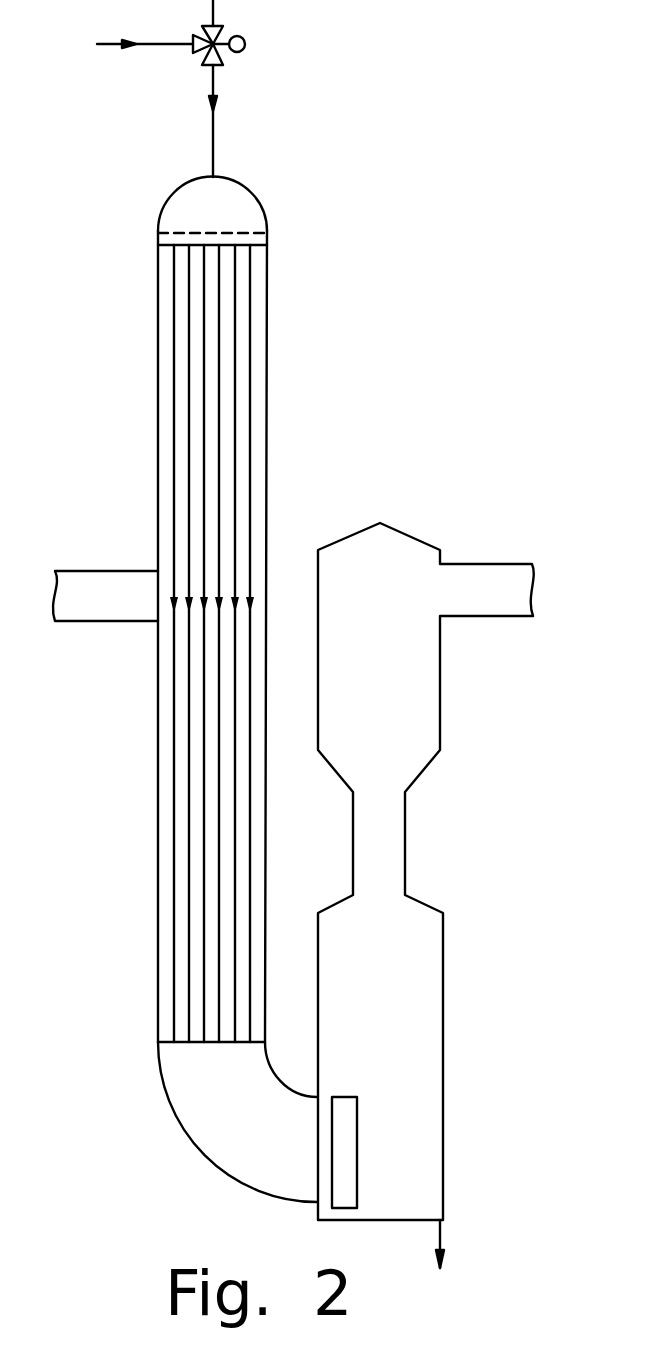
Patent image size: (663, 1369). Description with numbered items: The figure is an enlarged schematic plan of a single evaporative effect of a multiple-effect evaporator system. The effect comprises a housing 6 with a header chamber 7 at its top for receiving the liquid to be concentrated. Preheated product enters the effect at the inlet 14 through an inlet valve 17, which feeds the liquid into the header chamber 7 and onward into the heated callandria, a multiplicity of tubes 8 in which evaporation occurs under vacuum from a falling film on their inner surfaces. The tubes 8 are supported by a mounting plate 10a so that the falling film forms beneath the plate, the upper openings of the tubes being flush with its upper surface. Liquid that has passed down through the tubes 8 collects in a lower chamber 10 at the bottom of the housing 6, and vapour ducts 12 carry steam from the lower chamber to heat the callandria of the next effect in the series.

The inlet valve 17 is at (214, 37).
The inlet 14 is at (213, 176).
The header chamber 7 is at (237, 206).
The mounting plate 10a is at (267, 246).
The housing 6 is at (268, 307).
The tubes (callandria) 8 is at (174, 383).
The vapour ducts 12 is at (80, 580).
The lower chamber 10 is at (194, 1156).